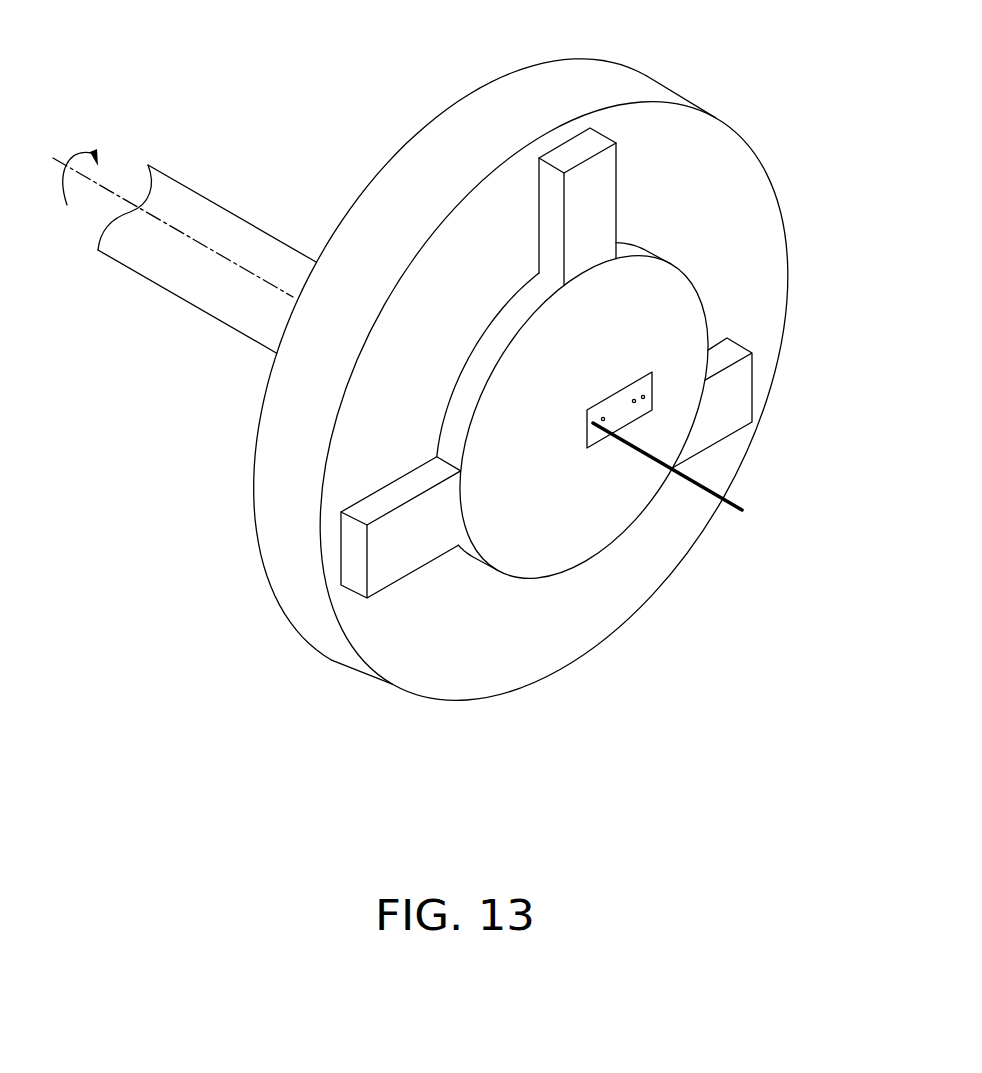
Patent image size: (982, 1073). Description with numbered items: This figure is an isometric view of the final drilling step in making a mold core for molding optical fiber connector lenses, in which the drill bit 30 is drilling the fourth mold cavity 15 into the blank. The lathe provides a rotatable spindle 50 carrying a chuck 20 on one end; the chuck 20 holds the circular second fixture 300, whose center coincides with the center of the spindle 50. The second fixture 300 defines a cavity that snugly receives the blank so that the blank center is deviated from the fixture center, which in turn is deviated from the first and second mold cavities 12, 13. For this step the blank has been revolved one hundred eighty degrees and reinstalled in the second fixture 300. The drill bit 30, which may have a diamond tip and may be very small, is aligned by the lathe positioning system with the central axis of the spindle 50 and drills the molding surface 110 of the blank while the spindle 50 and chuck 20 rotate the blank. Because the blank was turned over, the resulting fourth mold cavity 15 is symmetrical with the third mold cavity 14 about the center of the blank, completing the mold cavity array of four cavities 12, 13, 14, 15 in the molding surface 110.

The chuck 20 is at (277, 483).
The rotatable spindle 50 is at (203, 208).
The fourth mold cavity 15 is at (590, 452).
The second fixture 300 is at (538, 537).
The molding surface 110 is at (627, 416).
The first mold cavity 12 is at (634, 401).
The second mold cavity 13 is at (603, 419).
The third mold cavity 14 is at (643, 397).
The drill bit 30 is at (723, 525).